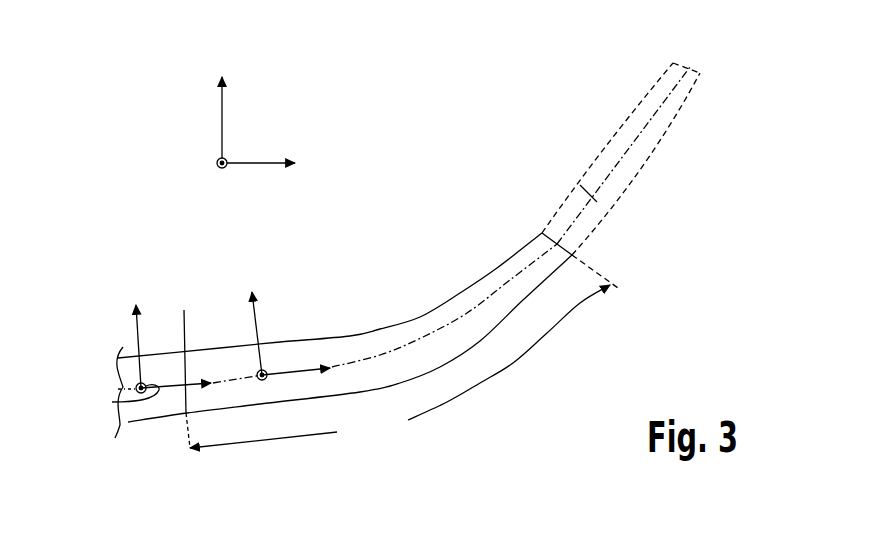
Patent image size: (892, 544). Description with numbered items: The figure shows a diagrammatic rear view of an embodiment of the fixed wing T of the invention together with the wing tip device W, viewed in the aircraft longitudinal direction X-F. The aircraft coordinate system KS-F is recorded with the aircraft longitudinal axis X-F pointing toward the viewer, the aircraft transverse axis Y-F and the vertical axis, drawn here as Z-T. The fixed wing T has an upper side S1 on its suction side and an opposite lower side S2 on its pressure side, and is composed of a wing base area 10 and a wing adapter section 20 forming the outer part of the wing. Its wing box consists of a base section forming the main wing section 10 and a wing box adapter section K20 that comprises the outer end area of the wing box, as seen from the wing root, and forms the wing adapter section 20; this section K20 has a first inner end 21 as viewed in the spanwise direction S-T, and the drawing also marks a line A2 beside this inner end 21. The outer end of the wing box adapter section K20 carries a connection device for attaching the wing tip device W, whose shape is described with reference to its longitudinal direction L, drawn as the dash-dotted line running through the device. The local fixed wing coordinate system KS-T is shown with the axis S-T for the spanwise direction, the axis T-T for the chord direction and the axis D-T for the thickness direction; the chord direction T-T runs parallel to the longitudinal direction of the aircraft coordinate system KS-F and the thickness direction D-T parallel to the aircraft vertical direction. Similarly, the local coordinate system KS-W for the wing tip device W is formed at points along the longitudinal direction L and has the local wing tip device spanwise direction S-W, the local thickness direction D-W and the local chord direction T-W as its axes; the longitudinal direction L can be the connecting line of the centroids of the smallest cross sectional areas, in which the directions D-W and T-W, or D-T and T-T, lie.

The fixed wing T is at (467, 206).
The wing tip device W is at (636, 172).
The longitudinal direction L is at (582, 186).
The wing adapter section 20 is at (428, 328).
The wing box adapter section K20 is at (398, 366).
The first inner end 21 is at (184, 310).
The upper side S1 is at (150, 354).
The lower side S2 is at (155, 422).
The second axis A2 is at (212, 348).
The wing base area 10 is at (128, 427).
The fixed wing coordinate system KS-T is at (109, 301).
The axis for the thickness direction of the fixed wing D-T is at (137, 333).
The axis for the chord direction of the fixed wing T-T is at (129, 383).
The axis for the spanwise direction of the fixed wing S-T is at (123, 403).
The local coordinate system for the wing tip device KS-W is at (295, 291).
The local wing tip device thickness direction D-W is at (248, 321).
The local wing tip device chord direction T-W is at (263, 370).
The local wing tip device spanwise direction S-W is at (308, 368).
The aircraft coordinate system KS-F is at (184, 122).
The Z axis Z-T is at (200, 114).
The aircraft transverse axis Y-F is at (262, 148).
The aircraft longitudinal axis X-F is at (188, 174).